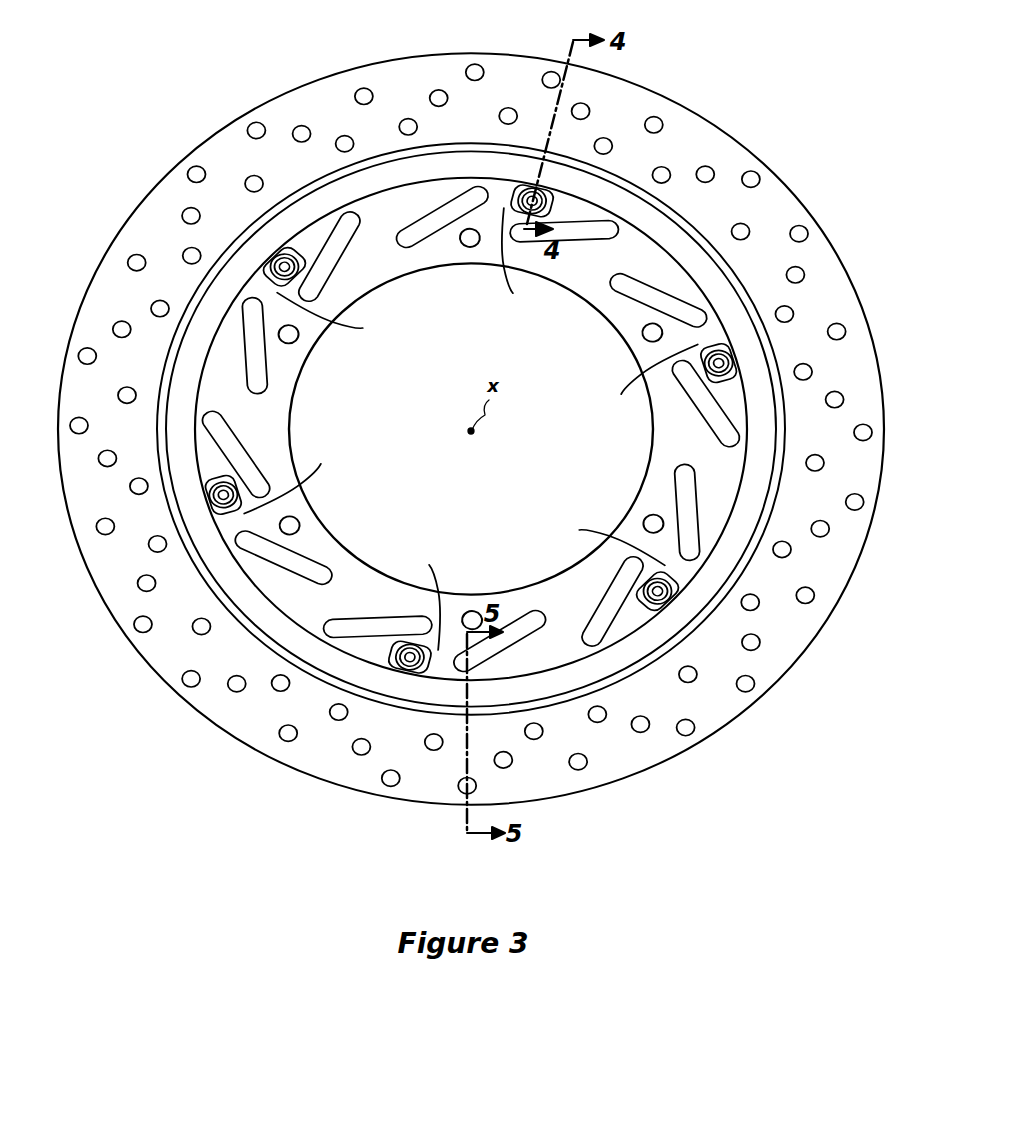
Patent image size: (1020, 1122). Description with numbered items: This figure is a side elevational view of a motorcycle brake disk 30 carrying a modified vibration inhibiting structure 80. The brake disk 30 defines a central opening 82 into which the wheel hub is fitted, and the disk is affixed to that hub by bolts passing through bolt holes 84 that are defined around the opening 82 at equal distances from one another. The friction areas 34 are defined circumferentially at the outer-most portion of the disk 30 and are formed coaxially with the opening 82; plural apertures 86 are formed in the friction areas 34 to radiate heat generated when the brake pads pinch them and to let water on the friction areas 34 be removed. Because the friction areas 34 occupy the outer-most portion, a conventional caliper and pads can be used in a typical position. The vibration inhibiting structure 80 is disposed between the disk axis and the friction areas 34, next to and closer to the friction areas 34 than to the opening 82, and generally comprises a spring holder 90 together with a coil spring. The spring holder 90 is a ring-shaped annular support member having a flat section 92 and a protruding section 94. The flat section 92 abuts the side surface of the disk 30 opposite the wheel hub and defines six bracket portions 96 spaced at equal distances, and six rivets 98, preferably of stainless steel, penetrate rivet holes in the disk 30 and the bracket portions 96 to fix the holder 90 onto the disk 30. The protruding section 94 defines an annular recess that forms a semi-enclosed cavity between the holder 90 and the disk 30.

The brake disk 30 is at (722, 122).
The friction areas 34 is at (770, 215).
The vibration inhibiting structure 80 is at (391, 168).
The opening 82 is at (290, 438).
The bolt holes 84 is at (467, 251).
The apertures 86 is at (803, 270).
The spring holder 90 is at (338, 190).
The flat section 92 is at (736, 482).
The protruding section 94 is at (747, 518).
The bracket portions 96 is at (511, 284).
The rivets 98 is at (525, 188).